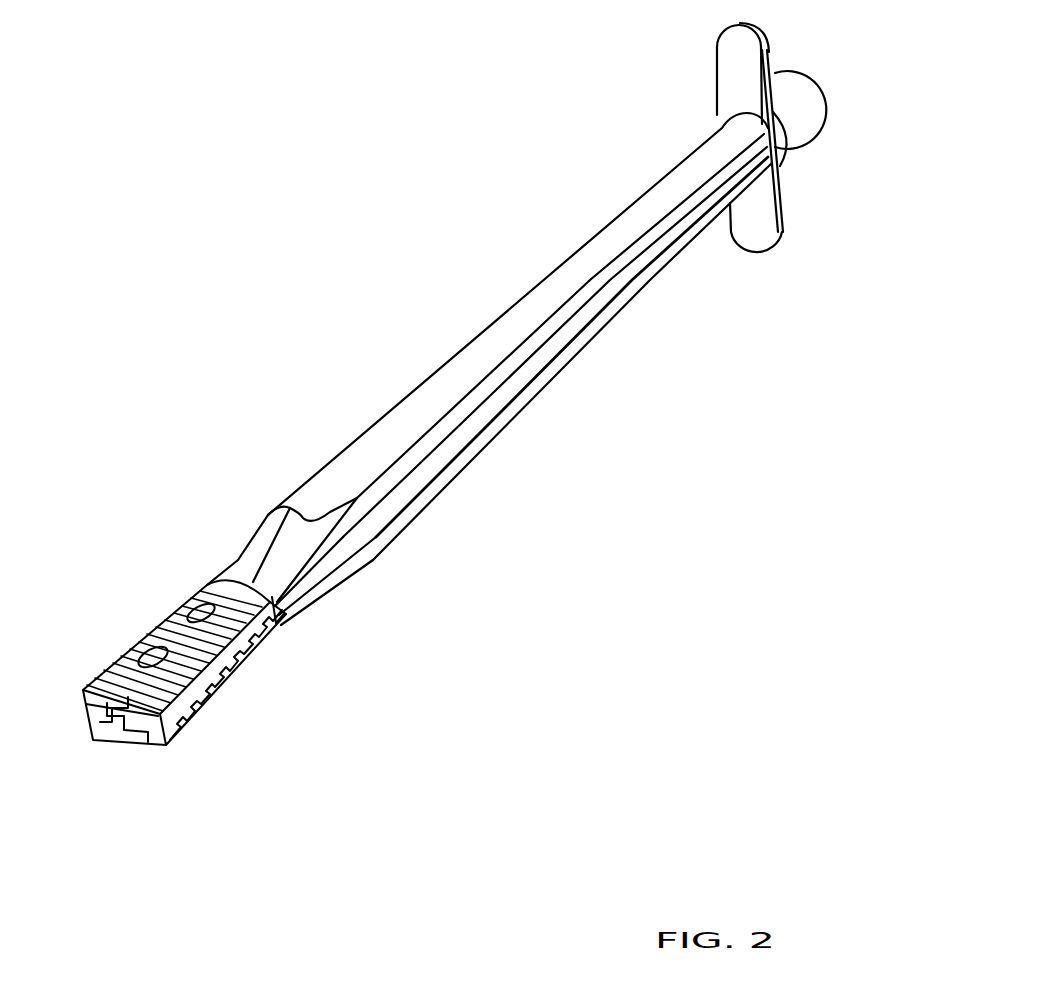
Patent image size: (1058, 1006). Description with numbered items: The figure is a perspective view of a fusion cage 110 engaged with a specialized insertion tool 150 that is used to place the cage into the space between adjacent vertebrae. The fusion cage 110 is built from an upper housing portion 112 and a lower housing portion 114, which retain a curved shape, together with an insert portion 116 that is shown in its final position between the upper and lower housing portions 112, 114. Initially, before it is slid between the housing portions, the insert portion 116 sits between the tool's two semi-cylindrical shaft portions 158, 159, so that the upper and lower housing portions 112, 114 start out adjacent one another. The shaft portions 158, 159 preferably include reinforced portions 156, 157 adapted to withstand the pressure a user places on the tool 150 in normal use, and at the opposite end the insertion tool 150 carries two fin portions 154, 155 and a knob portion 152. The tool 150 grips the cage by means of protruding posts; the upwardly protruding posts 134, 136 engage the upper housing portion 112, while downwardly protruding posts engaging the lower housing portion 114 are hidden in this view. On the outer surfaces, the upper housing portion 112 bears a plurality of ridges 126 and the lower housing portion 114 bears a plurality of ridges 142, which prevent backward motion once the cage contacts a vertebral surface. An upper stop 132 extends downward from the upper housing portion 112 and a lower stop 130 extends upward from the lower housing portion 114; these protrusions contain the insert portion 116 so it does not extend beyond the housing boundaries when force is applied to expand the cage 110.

The fusion cage 110 is at (135, 802).
The upper housing portion 112 is at (117, 668).
The lower housing portion 114 is at (227, 687).
The insert portion 116 is at (265, 625).
The ridges 126 is at (152, 632).
The lower stop 130 is at (132, 730).
The upper stop 132 is at (103, 725).
The upwardly protruding post 134 is at (150, 657).
The upwardly protruding post 136 is at (198, 613).
The ridges 142 is at (172, 736).
The insertion tool 150 is at (527, 182).
The knob portion 152 is at (808, 100).
The fin portion 154 is at (731, 72).
The fin portion 155 is at (758, 222).
The reinforced portion 156 is at (527, 307).
The reinforced portion 157 is at (565, 362).
The semi-cylindrical shaft portion 158 is at (265, 535).
The semi-cylindrical shaft portion 159 is at (330, 595).